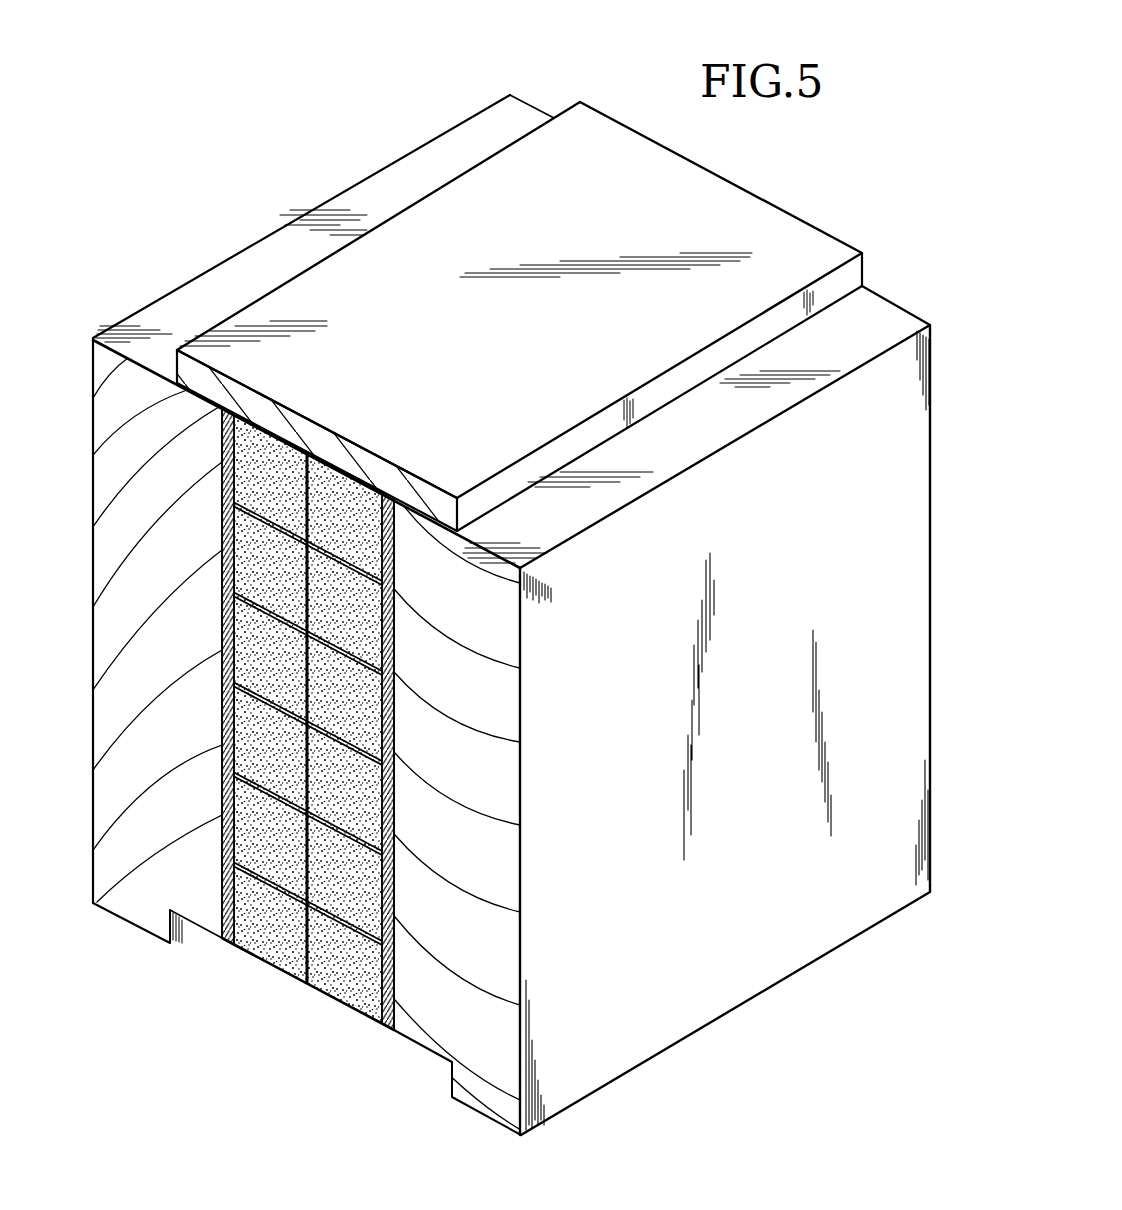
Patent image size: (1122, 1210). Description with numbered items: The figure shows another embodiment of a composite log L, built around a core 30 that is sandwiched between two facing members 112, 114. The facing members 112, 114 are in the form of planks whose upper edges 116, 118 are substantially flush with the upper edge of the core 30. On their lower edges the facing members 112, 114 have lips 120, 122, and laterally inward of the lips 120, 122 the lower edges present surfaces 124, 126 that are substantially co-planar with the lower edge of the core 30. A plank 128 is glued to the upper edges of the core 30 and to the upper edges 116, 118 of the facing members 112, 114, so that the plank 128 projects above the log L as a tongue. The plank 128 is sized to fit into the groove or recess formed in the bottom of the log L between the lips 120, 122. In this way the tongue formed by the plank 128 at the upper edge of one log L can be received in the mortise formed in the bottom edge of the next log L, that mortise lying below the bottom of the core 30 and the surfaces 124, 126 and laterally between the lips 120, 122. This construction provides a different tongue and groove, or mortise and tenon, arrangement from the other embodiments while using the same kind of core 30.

The facing member 112 is at (122, 601).
The facing member 114 is at (505, 837).
The upper edge 116 is at (275, 250).
The upper edge 118 is at (702, 442).
The lip 120 is at (131, 928).
The lip 122 is at (473, 1112).
The surface 124 is at (213, 936).
The surface 126 is at (428, 1050).
The plank 128 is at (552, 310).
The core 30 is at (296, 1013).
The log L is at (325, 1058).